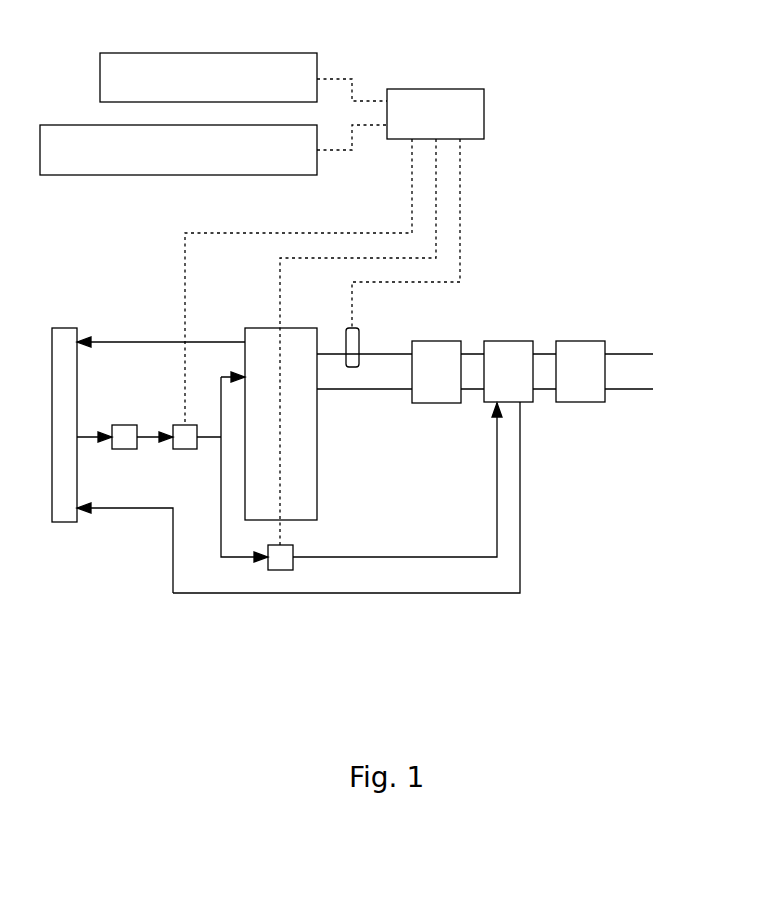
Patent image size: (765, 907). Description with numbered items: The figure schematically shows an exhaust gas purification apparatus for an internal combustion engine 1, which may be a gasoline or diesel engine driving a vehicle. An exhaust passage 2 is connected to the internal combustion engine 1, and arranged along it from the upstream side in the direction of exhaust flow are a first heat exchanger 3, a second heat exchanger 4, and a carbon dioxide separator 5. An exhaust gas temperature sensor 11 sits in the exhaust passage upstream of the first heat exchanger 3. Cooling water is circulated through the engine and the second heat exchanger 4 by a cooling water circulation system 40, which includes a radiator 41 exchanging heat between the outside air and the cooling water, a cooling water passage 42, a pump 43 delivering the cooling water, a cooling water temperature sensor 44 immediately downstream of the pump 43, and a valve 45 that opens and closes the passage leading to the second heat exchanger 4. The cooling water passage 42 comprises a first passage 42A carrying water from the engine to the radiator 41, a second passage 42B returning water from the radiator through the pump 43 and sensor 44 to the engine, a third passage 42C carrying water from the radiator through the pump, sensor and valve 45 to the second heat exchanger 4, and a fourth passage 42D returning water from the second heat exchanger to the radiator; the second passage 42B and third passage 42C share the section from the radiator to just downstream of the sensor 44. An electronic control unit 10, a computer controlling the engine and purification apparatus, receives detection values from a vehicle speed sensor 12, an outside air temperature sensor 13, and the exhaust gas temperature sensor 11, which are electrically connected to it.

The internal combustion engine 1 is at (317, 450).
The exhaust passage 2 is at (340, 392).
The first heat exchanger 3 is at (445, 340).
The second heat exchanger 4 is at (508, 340).
The carbon dioxide separator 5 is at (580, 340).
The electronic control unit (ECU) 10 is at (437, 89).
The exhaust gas temperature sensor 11 is at (362, 340).
The vehicle speed sensor 12 is at (272, 53).
The outside air temperature sensor 13 is at (275, 175).
The cooling water circulation system 40 is at (283, 466).
The radiator 41 is at (66, 328).
The cooling water passage 42 is at (125, 548).
The first passage 42A is at (148, 341).
The second passage 42B is at (219, 398).
The third passage 42C is at (430, 556).
The fourth passage 42D is at (333, 594).
The pump 43 is at (130, 424).
The cooling water temperature sensor 44 is at (180, 450).
The valve 45 is at (293, 547).